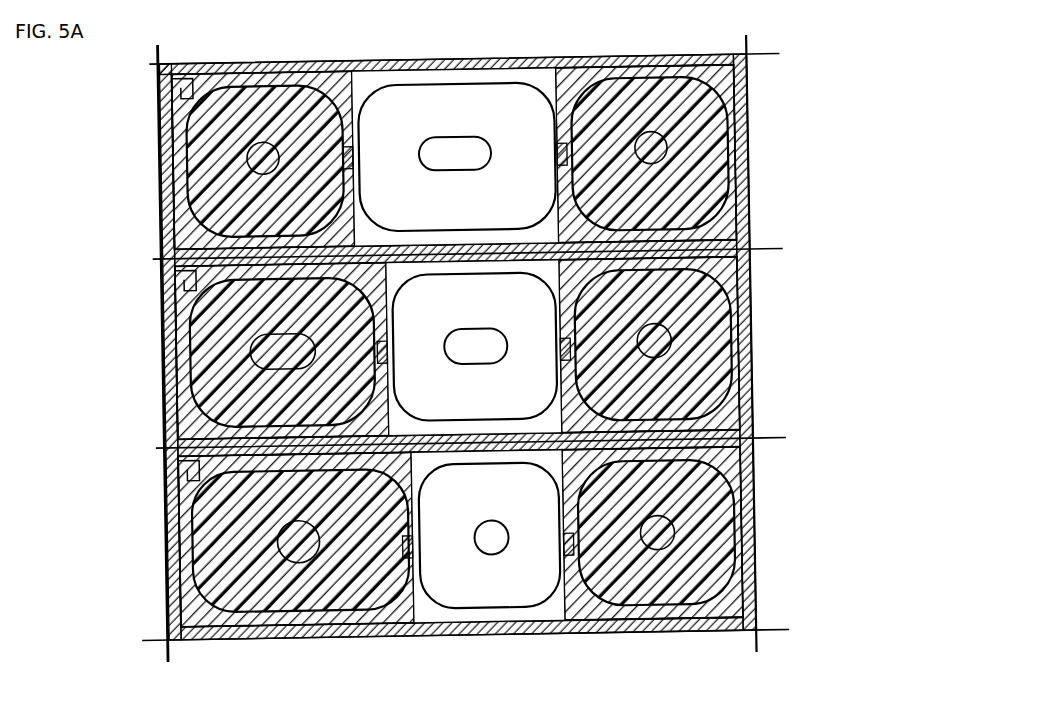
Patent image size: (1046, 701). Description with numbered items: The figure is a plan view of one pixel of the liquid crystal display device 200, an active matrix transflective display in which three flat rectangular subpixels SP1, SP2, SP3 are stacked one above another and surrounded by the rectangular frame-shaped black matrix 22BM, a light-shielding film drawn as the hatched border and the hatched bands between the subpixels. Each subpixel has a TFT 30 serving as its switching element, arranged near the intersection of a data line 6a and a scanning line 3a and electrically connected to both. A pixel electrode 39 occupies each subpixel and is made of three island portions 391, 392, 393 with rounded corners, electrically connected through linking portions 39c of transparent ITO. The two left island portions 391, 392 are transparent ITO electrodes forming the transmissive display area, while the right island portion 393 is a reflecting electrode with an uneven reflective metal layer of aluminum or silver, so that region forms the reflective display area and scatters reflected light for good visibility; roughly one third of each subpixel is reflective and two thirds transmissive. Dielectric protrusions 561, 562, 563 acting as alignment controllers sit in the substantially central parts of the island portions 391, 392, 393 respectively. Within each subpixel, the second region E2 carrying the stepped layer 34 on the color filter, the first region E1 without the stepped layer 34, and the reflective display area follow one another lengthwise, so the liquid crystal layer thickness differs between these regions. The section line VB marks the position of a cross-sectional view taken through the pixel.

The liquid crystal display device 200 is at (824, 72).
The TFT 30 is at (200, 54).
The stepped layer 34 is at (264, 77).
The pixel electrode 39 is at (722, 214).
The island portion 391 is at (205, 207).
The island portion 392 is at (462, 97).
The island portion 393 is at (697, 122).
The linking portions 39c is at (350, 166).
The dielectric protrusion 561 is at (273, 148).
The dielectric protrusion 562 is at (446, 173).
The dielectric protrusion 563 is at (665, 156).
The data line 6a is at (160, 66).
The scanning line 3a is at (158, 647).
The black matrix 22BM is at (742, 612).
The subpixel SP1 is at (158, 550).
The subpixel SP2 is at (157, 376).
The subpixel SP3 is at (157, 190).
The first region E1 is at (416, 78).
The second region E2 is at (329, 80).
The section line VB is at (101, 357).